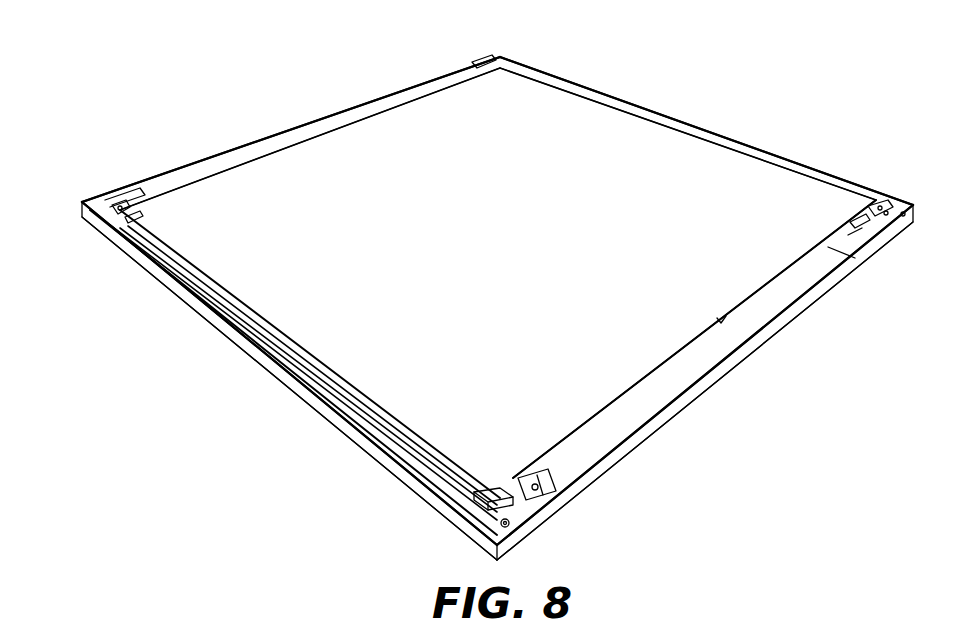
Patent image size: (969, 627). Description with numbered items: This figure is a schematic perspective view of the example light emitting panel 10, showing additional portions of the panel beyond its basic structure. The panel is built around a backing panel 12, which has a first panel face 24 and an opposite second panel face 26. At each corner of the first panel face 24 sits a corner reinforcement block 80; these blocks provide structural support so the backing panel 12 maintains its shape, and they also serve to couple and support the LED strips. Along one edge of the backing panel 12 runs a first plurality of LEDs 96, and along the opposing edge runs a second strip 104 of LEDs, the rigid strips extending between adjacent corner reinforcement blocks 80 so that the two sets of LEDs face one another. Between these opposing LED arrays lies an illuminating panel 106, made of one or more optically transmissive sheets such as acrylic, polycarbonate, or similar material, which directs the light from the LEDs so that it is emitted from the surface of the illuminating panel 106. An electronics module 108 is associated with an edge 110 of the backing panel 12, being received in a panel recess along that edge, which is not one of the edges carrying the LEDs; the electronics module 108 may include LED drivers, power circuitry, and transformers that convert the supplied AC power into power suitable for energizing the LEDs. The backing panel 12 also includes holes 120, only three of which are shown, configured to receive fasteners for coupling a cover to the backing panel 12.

The light emitting panel 10 is at (704, 77).
The backing panel 12 is at (215, 160).
The first panel face 24 is at (283, 381).
The second panel face 26 is at (328, 427).
The corner reinforcement block 80 is at (491, 66).
The first plurality of LEDs 96 is at (205, 302).
The second strip of LEDs 104 is at (738, 139).
The illuminating panel 106 is at (759, 191).
The electronics module 108 is at (795, 285).
The edge 110 is at (723, 378).
The holes 120 is at (905, 222).